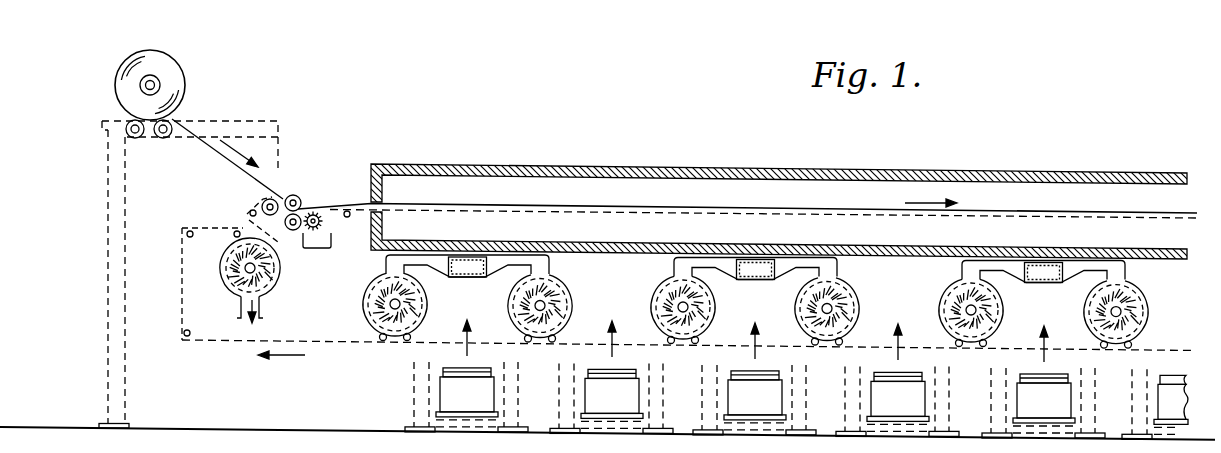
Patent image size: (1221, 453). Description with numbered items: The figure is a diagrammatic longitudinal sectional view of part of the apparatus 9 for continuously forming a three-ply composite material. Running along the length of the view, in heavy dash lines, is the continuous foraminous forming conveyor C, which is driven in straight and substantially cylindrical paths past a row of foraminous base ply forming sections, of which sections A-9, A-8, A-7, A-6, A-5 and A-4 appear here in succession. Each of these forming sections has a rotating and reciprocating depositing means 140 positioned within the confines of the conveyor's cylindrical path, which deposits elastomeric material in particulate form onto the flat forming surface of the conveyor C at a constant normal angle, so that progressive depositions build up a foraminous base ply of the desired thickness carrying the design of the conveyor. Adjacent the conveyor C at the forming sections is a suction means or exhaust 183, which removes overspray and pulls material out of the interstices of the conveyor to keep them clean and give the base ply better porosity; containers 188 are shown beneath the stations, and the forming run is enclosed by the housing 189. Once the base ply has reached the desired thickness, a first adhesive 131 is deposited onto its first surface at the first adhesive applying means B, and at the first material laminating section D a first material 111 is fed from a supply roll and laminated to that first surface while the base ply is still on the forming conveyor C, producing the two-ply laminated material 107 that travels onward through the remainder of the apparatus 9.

The apparatus 9 is at (1125, 128).
The first material 111 is at (198, 145).
The two-ply laminated material 107 is at (352, 194).
The housing 189 is at (756, 164).
The first adhesive 131 is at (233, 286).
The depositing means 140 is at (247, 268).
The suction means or exhaust 183 is at (390, 256).
The container 188 is at (450, 390).
The foraminous base ply forming section A-4 is at (1073, 312).
The foraminous base ply forming section A-5 is at (929, 292).
The foraminous base ply forming section A-6 is at (783, 307).
The foraminous base ply forming section A-7 is at (638, 287).
The foraminous base ply forming section A-8 is at (495, 303).
The foraminous base ply forming section A-9 is at (350, 294).
The first adhesive applying means B is at (290, 295).
The continuous foraminous forming conveyor C is at (158, 308).
The first material laminating section D is at (338, 146).